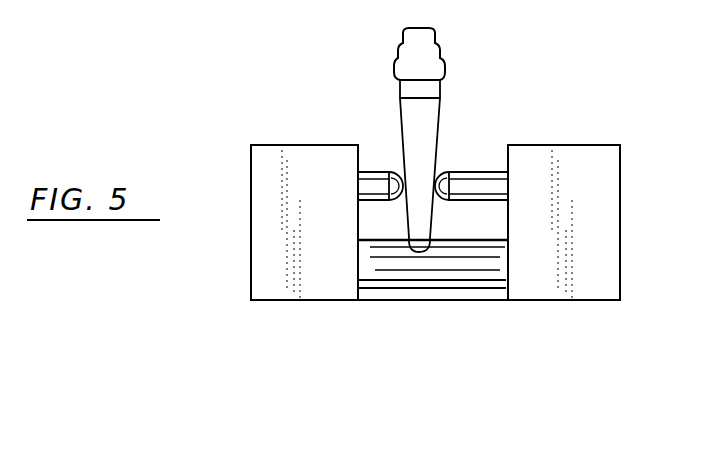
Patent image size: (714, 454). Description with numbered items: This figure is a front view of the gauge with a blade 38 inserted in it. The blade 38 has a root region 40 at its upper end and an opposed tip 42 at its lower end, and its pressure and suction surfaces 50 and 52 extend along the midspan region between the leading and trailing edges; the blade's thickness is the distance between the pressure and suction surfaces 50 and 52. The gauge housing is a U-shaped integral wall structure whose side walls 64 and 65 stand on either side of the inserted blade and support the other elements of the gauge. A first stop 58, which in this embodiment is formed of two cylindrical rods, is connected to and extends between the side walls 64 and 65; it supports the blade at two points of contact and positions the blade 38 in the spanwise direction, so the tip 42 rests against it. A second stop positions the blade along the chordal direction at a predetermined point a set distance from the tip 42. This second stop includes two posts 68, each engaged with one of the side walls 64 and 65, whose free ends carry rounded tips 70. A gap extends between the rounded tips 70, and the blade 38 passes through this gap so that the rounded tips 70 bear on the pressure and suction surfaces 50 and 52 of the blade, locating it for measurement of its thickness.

The blade 38 is at (425, 139).
The root region 40 is at (403, 62).
The tip 42 is at (438, 240).
The pressure surface 50 is at (442, 117).
The suction surface 52 is at (399, 120).
The first stop 58 is at (413, 280).
The side wall 64 is at (612, 247).
The side wall 65 is at (258, 248).
The posts 68 is at (378, 185).
The rounded tips 70 is at (394, 172).